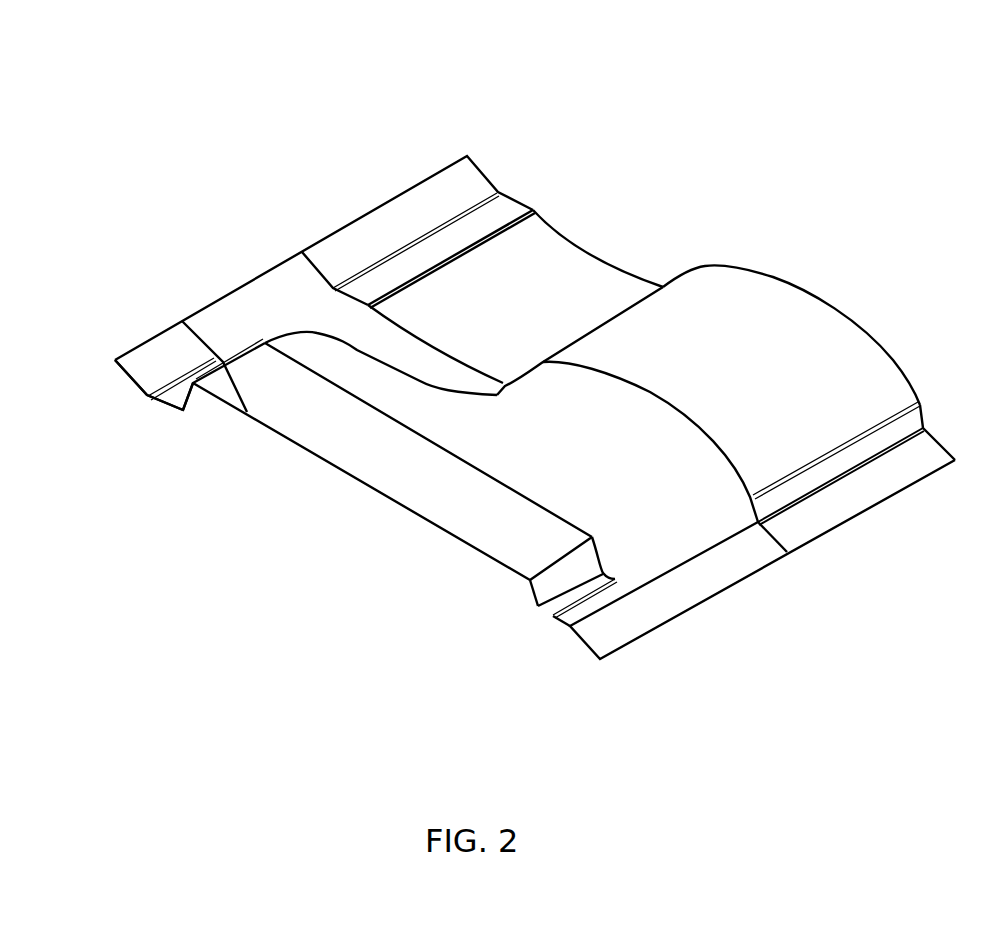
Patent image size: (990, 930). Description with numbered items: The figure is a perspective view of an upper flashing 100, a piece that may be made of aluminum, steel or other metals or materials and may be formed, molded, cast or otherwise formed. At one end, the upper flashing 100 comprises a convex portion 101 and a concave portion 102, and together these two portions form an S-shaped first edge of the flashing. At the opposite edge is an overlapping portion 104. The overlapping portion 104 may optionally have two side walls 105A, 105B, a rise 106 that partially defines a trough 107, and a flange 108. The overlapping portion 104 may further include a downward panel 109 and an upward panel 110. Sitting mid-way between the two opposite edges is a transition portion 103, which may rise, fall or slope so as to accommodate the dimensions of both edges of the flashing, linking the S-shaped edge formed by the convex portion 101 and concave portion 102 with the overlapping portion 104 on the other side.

The upper flashing 100 is at (520, 388).
The convex portion 101 is at (588, 258).
The concave portion 102 is at (833, 310).
The transition portion 103 is at (510, 453).
The overlapping portion 104 is at (285, 440).
The side wall 105A is at (187, 405).
The side wall 105B is at (538, 610).
The rise 106 is at (555, 622).
The trough 107 is at (538, 614).
The flange 108 is at (600, 658).
The downward panel 109 is at (161, 406).
The upward panel 110 is at (125, 373).